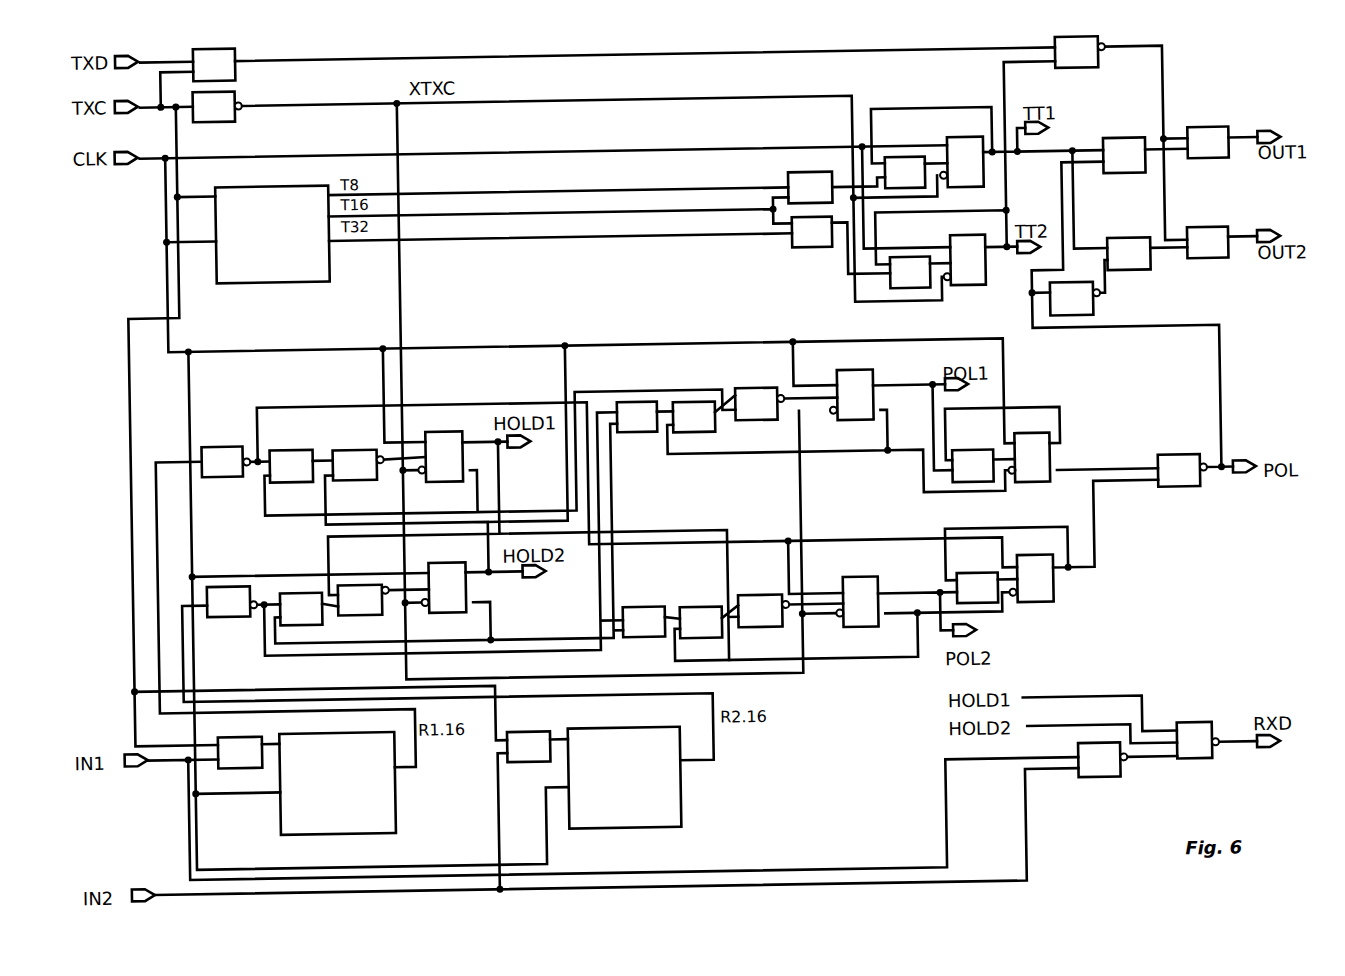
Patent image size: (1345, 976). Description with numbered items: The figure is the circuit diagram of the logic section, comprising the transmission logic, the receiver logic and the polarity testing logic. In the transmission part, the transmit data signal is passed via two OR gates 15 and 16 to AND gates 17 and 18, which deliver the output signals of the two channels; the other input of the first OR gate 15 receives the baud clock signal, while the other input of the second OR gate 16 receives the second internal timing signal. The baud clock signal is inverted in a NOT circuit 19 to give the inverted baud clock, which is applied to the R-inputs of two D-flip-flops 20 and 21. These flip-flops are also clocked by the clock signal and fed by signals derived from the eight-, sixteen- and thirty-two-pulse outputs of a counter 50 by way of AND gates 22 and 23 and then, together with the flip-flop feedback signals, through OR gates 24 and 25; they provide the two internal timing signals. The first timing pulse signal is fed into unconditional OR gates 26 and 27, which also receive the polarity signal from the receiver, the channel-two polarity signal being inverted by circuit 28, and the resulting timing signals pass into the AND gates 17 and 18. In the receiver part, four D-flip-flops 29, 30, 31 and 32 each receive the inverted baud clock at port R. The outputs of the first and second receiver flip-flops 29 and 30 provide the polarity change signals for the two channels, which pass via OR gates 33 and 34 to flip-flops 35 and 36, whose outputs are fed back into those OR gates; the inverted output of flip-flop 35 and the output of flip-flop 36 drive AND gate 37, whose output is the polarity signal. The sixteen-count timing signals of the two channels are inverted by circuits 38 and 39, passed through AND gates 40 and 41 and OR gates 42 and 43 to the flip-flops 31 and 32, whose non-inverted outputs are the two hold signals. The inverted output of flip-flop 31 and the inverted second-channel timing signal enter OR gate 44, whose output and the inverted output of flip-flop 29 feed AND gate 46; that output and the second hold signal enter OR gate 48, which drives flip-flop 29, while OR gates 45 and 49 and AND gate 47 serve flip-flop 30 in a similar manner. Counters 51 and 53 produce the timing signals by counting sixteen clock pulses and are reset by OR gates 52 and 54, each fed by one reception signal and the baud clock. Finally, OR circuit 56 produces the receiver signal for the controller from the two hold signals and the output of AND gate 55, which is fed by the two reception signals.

The OR gate 15 is at (236, 80).
The OR gate 16 is at (1100, 70).
The AND gate 17 is at (1205, 147).
The AND gate 18 is at (1205, 247).
The NOT circuit 19 is at (236, 124).
The D-flip-flop 20 is at (957, 153).
The D-flip-flop 21 is at (975, 301).
The AND gate 22 is at (800, 185).
The AND gate 23 is at (812, 261).
The OR gate 24 is at (895, 172).
The OR gate 25 is at (916, 256).
The unconditional OR gate 26 is at (1114, 157).
The unconditional OR gate 27 is at (1135, 289).
The inverting circuit 28 is at (1088, 322).
The D-flip-flop 29 is at (834, 384).
The D-flip-flop 30 is at (861, 591).
The D-flip-flop 31 is at (440, 439).
The D-flip-flop 32 is at (456, 602).
The OR gate 33 is at (964, 467).
The OR gate 34 is at (960, 574).
The flip-flop 35 is at (1044, 468).
The flip-flop 36 is at (1044, 610).
The AND gate 37 is at (1168, 473).
The inverting circuit 38 is at (220, 450).
The inverting circuit 39 is at (232, 590).
The AND gate 40 is at (285, 455).
The AND gate 41 is at (290, 598).
The OR gate 42 is at (349, 456).
The OR gate 43 is at (356, 591).
The OR gate 44 is at (630, 412).
The OR gate 45 is at (635, 617).
The AND gate 46 is at (690, 413).
The AND gate 47 is at (690, 618).
The OR gate 48 is at (740, 400).
The OR gate 49 is at (755, 607).
The counter 50 is at (296, 191).
The counter 51 is at (382, 803).
The OR gate 52 is at (230, 772).
The counter 53 is at (668, 800).
The OR gate 54 is at (530, 724).
The AND gate 55 is at (1085, 795).
The OR circuit 56 is at (1182, 742).